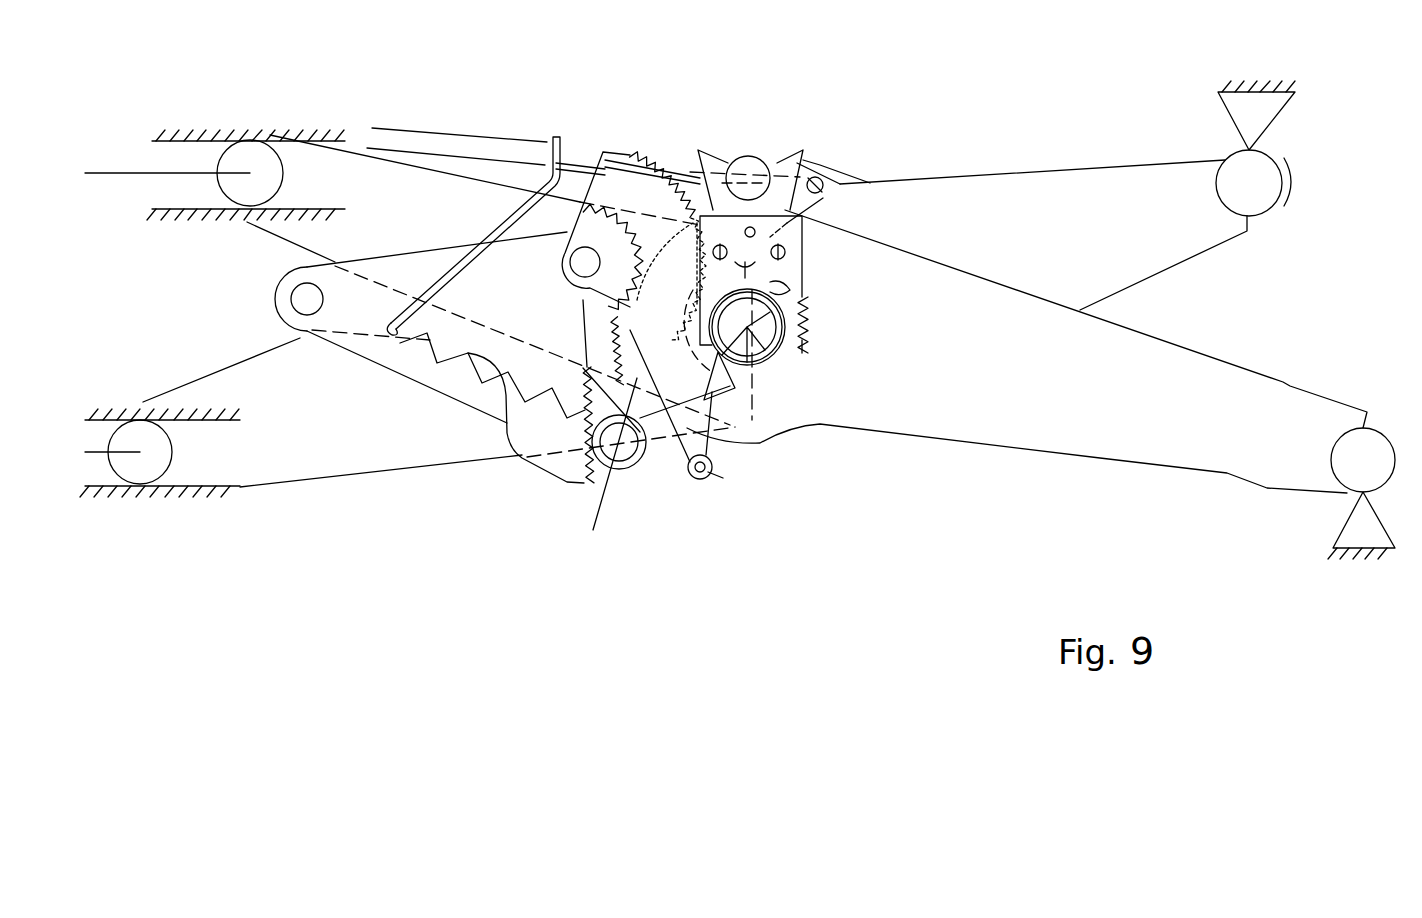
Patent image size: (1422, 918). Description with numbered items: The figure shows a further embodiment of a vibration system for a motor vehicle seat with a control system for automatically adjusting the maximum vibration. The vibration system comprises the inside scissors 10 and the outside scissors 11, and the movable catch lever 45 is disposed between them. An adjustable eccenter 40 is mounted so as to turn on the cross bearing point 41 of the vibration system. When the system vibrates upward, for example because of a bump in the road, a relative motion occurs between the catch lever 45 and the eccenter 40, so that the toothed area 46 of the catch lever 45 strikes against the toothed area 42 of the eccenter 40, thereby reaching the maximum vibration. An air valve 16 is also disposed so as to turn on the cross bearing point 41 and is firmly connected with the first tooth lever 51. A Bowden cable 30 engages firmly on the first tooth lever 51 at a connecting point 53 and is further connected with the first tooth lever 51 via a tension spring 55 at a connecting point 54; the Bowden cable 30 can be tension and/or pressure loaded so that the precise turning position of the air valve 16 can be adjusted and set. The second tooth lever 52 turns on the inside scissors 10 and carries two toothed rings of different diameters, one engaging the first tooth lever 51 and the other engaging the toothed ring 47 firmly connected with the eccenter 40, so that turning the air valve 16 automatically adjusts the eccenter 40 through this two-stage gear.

The inside scissors 10 is at (1043, 235).
The outside scissors 11 is at (1027, 351).
The air valve 16 is at (793, 275).
The Bowden cable 30 is at (578, 153).
The eccenter 40 is at (630, 400).
The cross bearing point 41 is at (757, 330).
The toothed area of the eccenter 42 is at (627, 450).
The catch lever 45 is at (510, 313).
The toothed area of the catch lever 46 is at (580, 478).
The toothed ring 47 is at (778, 285).
The first tooth lever 51 is at (823, 198).
The second tooth lever 52 is at (622, 183).
The connecting point of the Bowden cable 53 is at (795, 225).
The connecting point of the tension spring 54 is at (700, 479).
The tension spring 55 is at (723, 478).